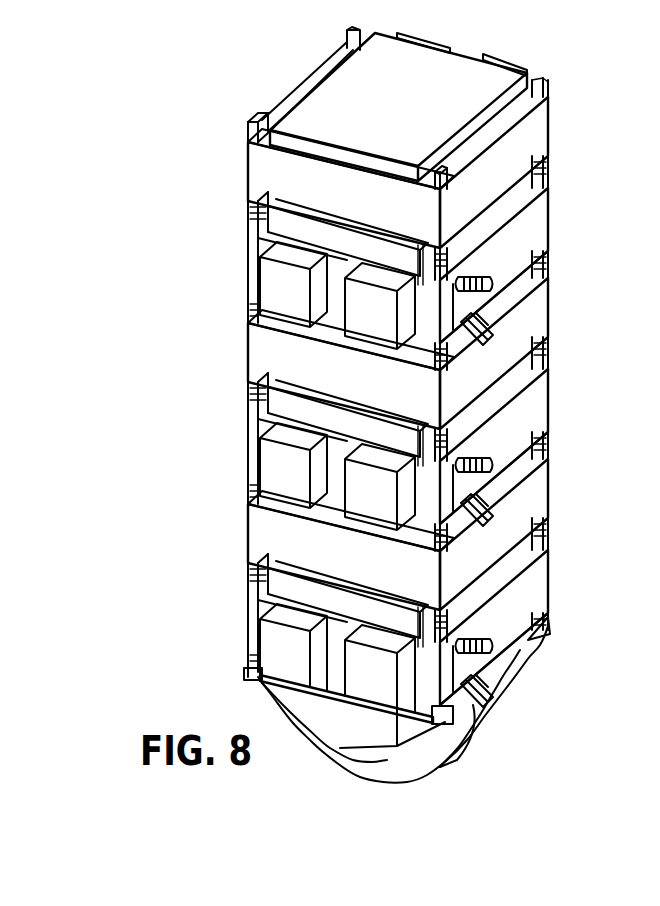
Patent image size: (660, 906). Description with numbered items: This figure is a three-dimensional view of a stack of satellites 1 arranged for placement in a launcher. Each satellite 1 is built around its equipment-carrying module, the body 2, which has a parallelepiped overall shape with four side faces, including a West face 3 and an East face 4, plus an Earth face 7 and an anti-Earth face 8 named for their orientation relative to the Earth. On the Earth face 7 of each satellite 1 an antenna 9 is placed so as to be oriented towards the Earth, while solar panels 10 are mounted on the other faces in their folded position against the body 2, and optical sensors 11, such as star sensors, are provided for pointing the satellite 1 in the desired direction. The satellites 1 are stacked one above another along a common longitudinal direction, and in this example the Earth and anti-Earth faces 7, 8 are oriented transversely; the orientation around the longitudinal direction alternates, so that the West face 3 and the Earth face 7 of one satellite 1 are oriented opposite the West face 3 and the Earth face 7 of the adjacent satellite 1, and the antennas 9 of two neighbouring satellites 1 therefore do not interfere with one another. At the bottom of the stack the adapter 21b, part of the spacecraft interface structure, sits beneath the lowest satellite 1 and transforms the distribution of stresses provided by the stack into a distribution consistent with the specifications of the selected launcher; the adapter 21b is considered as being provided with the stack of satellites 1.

The satellite 1 is at (214, 239).
The body 2 is at (248, 173).
The West face 3 is at (540, 235).
The East face 4 is at (540, 139).
The Earth face 7 is at (258, 248).
The anti-Earth face 8 is at (260, 155).
The antenna 9 is at (362, 323).
The solar panel 10 is at (453, 83).
The optical sensor 11 is at (492, 337).
The adapter 21b is at (398, 768).